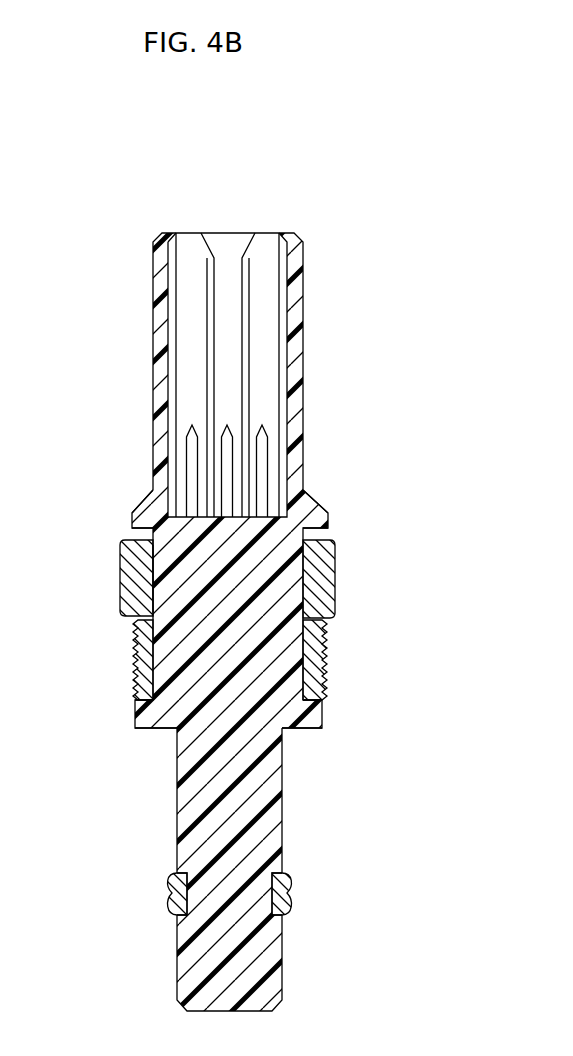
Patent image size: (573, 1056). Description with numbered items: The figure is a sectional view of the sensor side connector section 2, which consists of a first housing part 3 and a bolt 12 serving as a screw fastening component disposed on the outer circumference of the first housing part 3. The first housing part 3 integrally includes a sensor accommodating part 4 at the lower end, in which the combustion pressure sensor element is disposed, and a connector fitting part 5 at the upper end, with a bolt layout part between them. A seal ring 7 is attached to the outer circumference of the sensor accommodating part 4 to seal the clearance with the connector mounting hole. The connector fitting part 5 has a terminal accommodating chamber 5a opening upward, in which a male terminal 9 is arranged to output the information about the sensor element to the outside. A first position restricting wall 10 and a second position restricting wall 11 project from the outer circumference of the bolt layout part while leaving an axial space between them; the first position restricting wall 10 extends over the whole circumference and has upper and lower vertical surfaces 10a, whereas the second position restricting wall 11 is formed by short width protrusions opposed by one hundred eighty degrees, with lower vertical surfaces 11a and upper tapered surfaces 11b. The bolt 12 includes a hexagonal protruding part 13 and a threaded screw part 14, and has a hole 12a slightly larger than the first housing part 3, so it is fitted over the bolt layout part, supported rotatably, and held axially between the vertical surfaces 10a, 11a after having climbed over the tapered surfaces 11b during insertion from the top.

The sensor side connector section 2 is at (122, 247).
The first housing part 3 is at (318, 397).
The sensor accommodating part 4 is at (265, 956).
The connector fitting part 5 is at (300, 333).
The terminal accommodating chamber 5a is at (278, 287).
The seal ring 7 is at (292, 879).
The male terminal 9 is at (225, 430).
The first position restricting wall 10 is at (125, 712).
The vertical surfaces 10a is at (142, 692).
The second position restricting wall 11 is at (120, 512).
The vertical surfaces 11a is at (137, 533).
The tapered surfaces 11b is at (140, 497).
The bolt 12 is at (110, 577).
The hole 12a is at (160, 603).
The hexagonal protruding part 13 is at (320, 578).
The screw part 14 is at (328, 643).